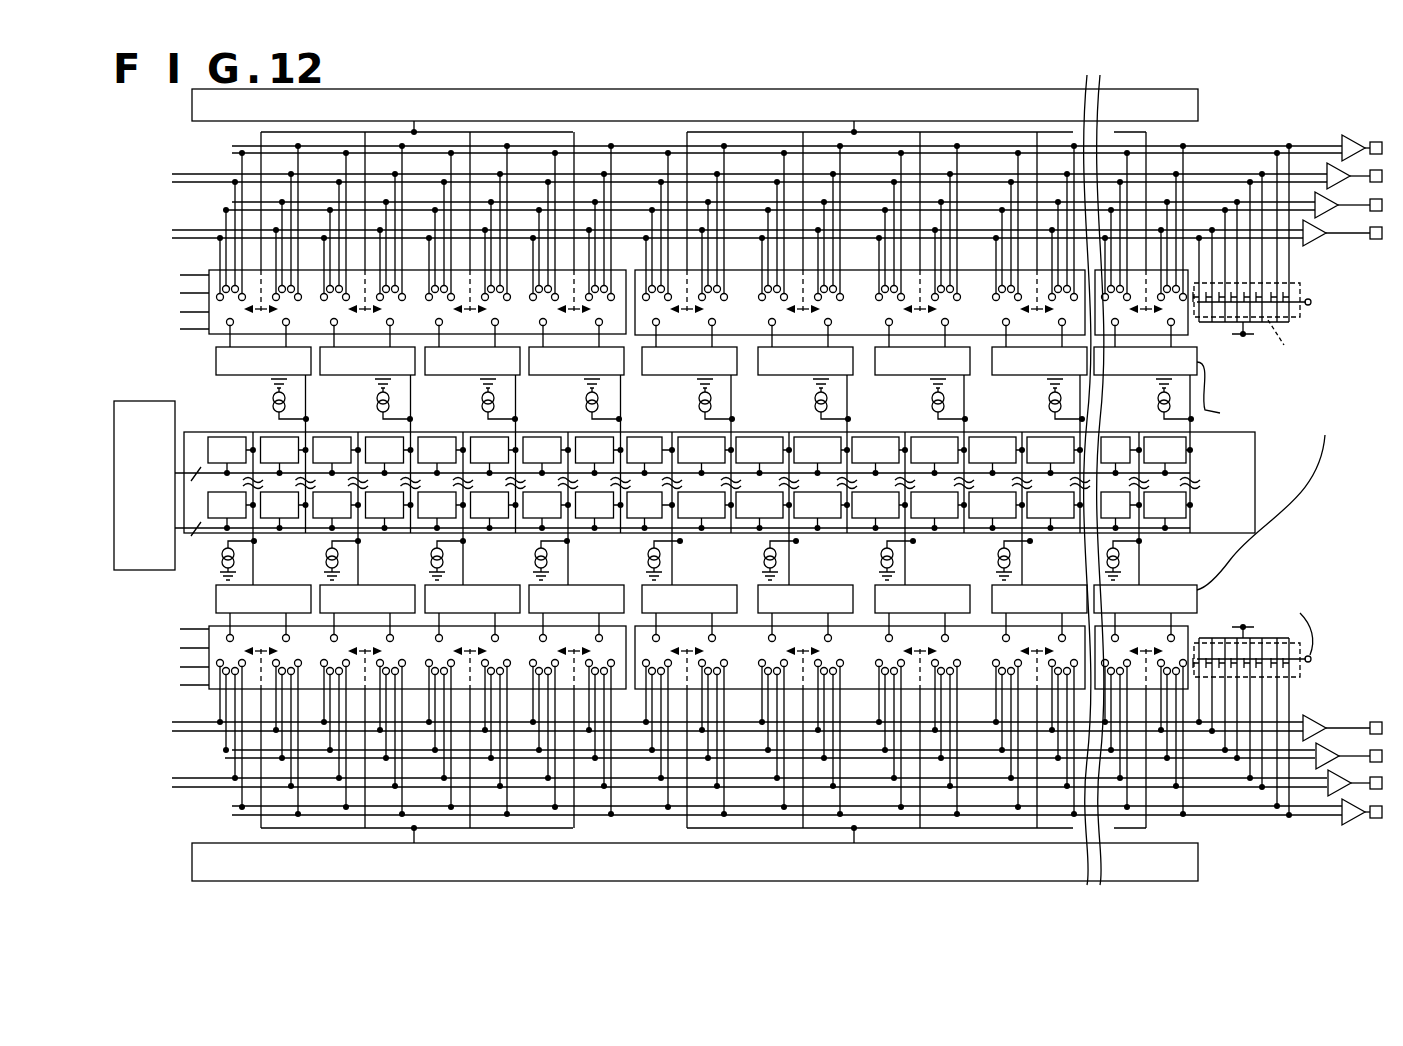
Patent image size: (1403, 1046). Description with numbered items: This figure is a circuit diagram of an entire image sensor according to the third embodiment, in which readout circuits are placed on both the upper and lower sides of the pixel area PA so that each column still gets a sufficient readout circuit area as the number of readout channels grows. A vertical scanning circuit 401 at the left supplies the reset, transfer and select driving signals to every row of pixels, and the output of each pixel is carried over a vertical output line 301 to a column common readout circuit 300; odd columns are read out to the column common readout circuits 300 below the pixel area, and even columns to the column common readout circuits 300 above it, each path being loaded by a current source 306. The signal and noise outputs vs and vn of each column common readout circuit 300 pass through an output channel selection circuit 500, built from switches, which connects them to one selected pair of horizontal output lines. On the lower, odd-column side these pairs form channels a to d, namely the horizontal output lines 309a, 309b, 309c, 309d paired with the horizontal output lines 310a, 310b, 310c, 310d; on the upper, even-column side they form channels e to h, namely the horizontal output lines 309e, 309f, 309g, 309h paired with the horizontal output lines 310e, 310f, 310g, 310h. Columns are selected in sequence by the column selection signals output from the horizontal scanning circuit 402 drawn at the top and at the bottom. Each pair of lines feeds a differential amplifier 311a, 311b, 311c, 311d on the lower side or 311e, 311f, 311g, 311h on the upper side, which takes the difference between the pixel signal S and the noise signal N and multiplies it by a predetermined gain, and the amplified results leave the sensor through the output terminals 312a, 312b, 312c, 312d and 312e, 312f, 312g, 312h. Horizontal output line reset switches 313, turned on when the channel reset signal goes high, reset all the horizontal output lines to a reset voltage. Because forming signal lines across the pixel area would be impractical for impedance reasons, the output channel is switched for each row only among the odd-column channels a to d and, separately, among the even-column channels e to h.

The horizontal scanning circuit 402 is at (192, 100).
The vertical scanning circuit 401 is at (130, 401).
The vertical output line 301 is at (186, 432).
The column common readout circuit 300 is at (1161, 610).
The current source 306 is at (274, 409).
The output channel selection circuit 500 is at (210, 334).
The horizontal output line reset switch 313 is at (1272, 318).
The horizontal output line 309a is at (715, 715).
The horizontal output line 309b is at (747, 743).
The horizontal output line 309c is at (727, 771).
The horizontal output line 309d is at (764, 803).
The horizontal output line 309e is at (715, 224).
The horizontal output line 309f is at (751, 196).
The horizontal output line 309g is at (727, 168).
The horizontal output line 309h is at (764, 140).
The horizontal output line 310a is at (715, 733).
The horizontal output line 310b is at (747, 766).
The horizontal output line 310c is at (727, 789).
The horizontal output line 310d is at (764, 823).
The horizontal output line 310e is at (715, 242).
The horizontal output line 310f is at (751, 214).
The horizontal output line 310g is at (727, 185).
The horizontal output line 310h is at (764, 157).
The differential amplifier 311a is at (1305, 716).
The differential amplifier 311b is at (1333, 744).
The differential amplifier 311c is at (1332, 796).
The differential amplifier 311d is at (1346, 825).
The differential amplifier 311e is at (1311, 246).
The differential amplifier 311f is at (1325, 218).
The differential amplifier 311g is at (1331, 164).
The differential amplifier 311h is at (1346, 136).
The output terminal 312a is at (1372, 722).
The output terminal 312b is at (1383, 756).
The output terminal 312c is at (1383, 790).
The output terminal 312d is at (1373, 819).
The output terminal 312e is at (1375, 240).
The output terminal 312f is at (1383, 206).
The output terminal 312g is at (1383, 176).
The output terminal 312h is at (1373, 142).